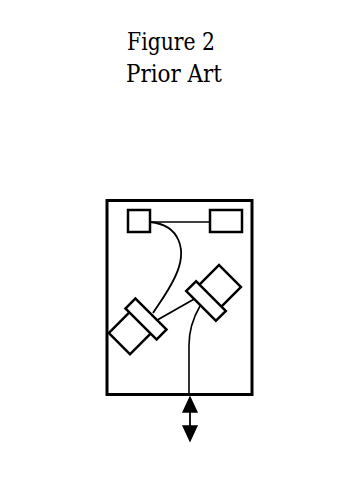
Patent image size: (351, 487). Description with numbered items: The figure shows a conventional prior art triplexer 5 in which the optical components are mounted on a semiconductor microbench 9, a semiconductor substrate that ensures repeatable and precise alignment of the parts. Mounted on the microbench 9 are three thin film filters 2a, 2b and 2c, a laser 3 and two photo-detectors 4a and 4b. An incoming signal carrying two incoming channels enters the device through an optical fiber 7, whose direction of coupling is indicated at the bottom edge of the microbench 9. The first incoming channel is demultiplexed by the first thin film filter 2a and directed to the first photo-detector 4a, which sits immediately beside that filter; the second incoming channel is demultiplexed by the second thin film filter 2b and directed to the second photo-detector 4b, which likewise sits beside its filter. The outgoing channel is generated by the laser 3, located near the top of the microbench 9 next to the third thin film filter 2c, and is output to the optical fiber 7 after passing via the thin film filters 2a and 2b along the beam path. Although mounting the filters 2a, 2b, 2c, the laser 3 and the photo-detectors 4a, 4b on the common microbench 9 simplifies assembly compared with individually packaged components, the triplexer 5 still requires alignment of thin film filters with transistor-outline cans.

The triplexer 5 is at (238, 159).
The semiconductor microbench 9 is at (149, 373).
The thin film filter 2c is at (128, 223).
The laser 3 is at (230, 220).
The thin film filter 2b is at (132, 317).
The photo-detector 4b is at (117, 333).
The thin film filter 2a is at (217, 320).
The photo-detector 4a is at (233, 290).
The optical fiber 7 is at (193, 417).